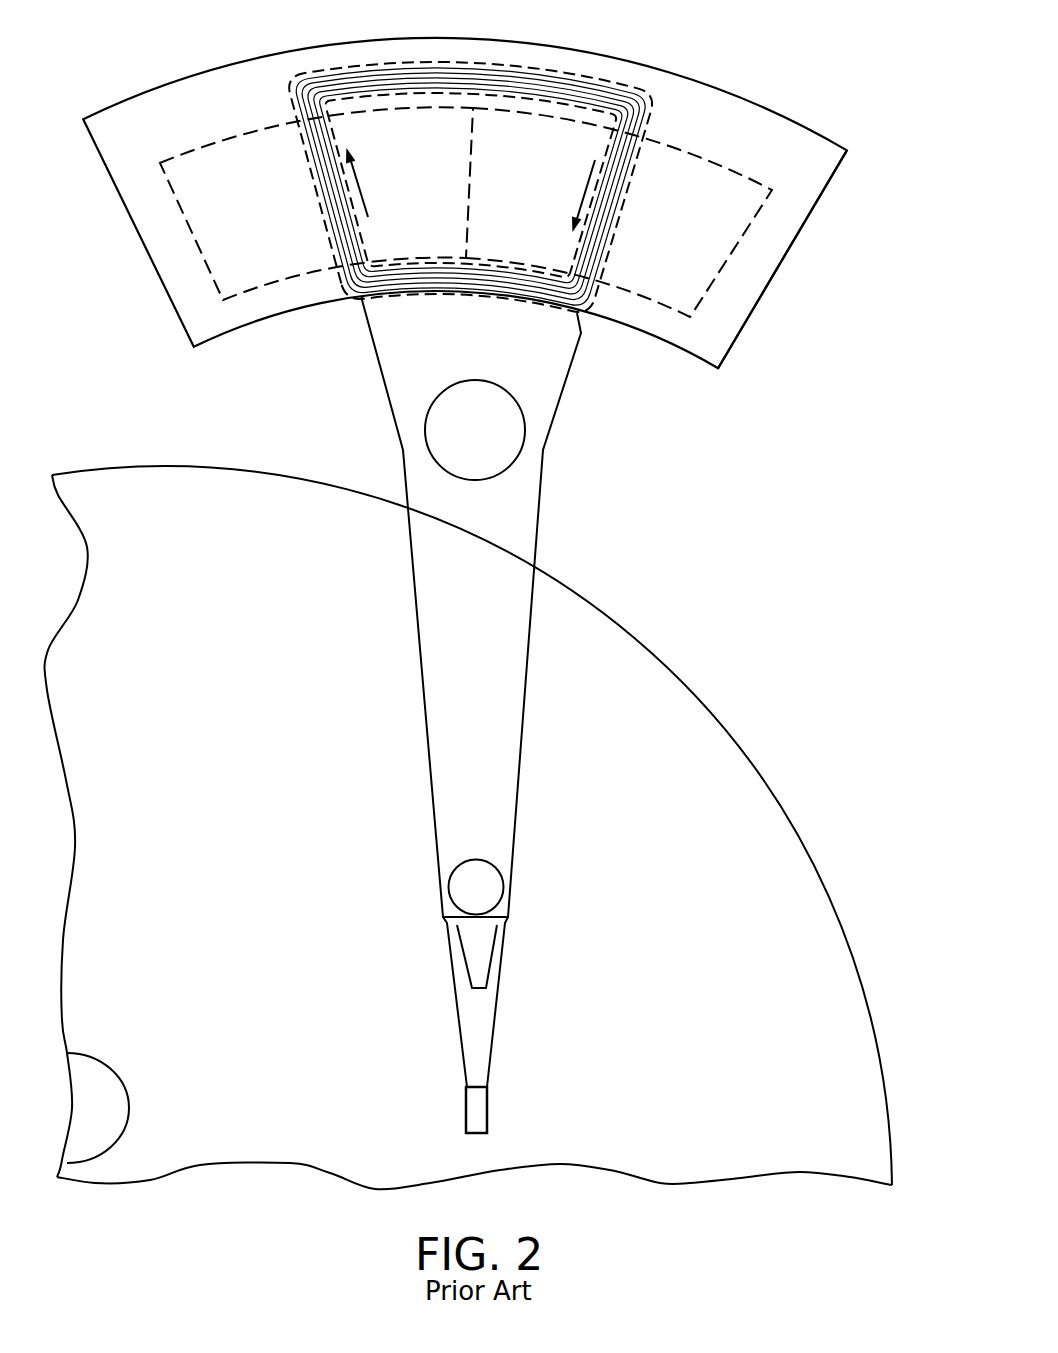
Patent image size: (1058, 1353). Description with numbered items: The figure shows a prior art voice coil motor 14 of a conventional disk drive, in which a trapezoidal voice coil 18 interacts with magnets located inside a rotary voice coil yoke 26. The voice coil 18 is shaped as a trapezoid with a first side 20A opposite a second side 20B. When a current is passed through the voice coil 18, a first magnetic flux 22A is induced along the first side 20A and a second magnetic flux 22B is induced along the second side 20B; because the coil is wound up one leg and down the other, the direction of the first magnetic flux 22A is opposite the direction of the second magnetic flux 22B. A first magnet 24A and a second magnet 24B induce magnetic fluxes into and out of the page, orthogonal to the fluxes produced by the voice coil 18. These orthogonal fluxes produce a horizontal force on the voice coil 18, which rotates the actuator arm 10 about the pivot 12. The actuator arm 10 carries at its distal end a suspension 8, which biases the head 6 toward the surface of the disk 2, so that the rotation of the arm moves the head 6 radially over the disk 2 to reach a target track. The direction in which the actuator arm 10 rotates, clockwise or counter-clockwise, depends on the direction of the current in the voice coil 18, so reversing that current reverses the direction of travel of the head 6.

The disk 2 is at (663, 616).
The head 6 is at (480, 1115).
The suspension 8 is at (488, 1035).
The actuator arm 10 is at (524, 714).
The pivot 12 is at (487, 443).
The voice coil motor 14 is at (513, 30).
The voice coil 18 is at (285, 95).
The first side 20A is at (305, 160).
The second side 20B is at (636, 180).
The first magnetic flux 22A is at (358, 180).
The second magnetic flux 22B is at (588, 186).
The first magnet 24A is at (280, 248).
The second magnet 24B is at (705, 261).
The rotary voice coil yoke 26 is at (811, 168).